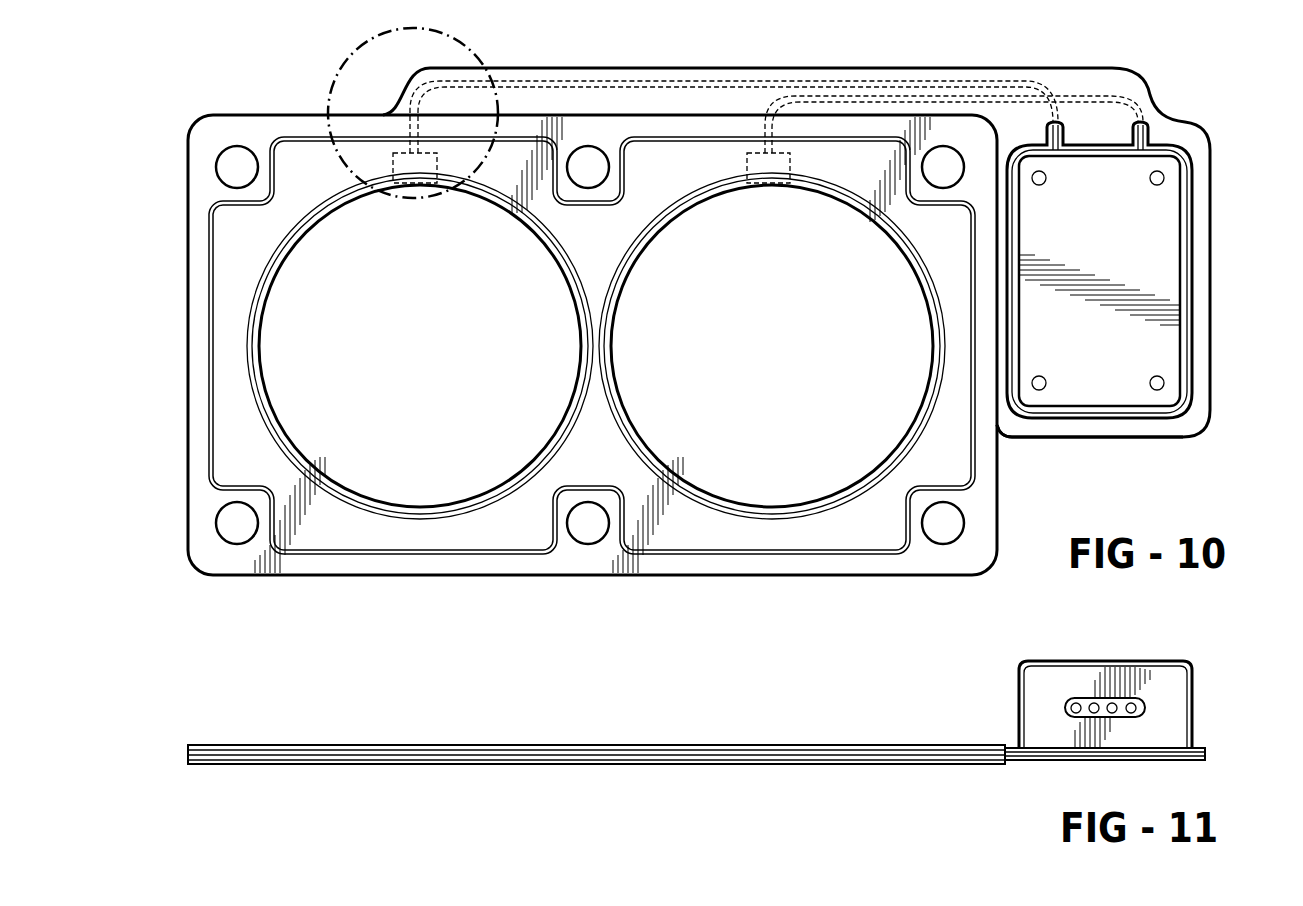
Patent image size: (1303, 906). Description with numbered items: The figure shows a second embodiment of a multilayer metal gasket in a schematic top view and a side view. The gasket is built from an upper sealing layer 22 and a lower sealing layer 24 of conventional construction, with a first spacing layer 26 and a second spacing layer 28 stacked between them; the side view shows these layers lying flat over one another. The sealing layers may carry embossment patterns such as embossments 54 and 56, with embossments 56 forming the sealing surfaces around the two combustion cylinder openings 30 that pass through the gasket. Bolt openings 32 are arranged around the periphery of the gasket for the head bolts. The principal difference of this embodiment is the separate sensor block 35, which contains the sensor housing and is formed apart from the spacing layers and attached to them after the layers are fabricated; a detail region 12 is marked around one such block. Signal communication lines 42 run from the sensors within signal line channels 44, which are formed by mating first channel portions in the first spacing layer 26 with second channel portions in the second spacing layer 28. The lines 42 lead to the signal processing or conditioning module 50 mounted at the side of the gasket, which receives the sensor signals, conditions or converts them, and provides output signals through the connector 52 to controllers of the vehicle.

In FIG. 10, the detail region of gasket 12 is at (330, 100).
In FIG. 10, the upper sealing layer 22 is at (985, 512).
In FIG. 11, the upper sealing layer 22 is at (922, 745).
In FIG. 11, the lower sealing layer 24 is at (878, 766).
In FIG. 10, the first spacing layer 26 is at (665, 80).
In FIG. 11, the first spacing layer 26 is at (676, 750).
In FIG. 11, the second spacing layer 28 is at (385, 762).
In FIG. 10, the combustion cylinder openings 30 is at (402, 495).
In FIG. 10, the bolt openings 32 is at (232, 164).
In FIG. 10, the sensor block 35 is at (437, 170).
In FIG. 10, the signal communication lines 42 is at (1068, 133).
In FIG. 10, the signal line channels 44 is at (867, 96).
In FIG. 10, the signal processing or conditioning module 50 is at (1185, 246).
In FIG. 11, the signal processing or conditioning module 50 is at (1160, 661).
In FIG. 11, the connector 52 is at (1125, 715).
In FIG. 10, the embossments 54 is at (975, 466).
In FIG. 10, the embossments 56 is at (462, 512).